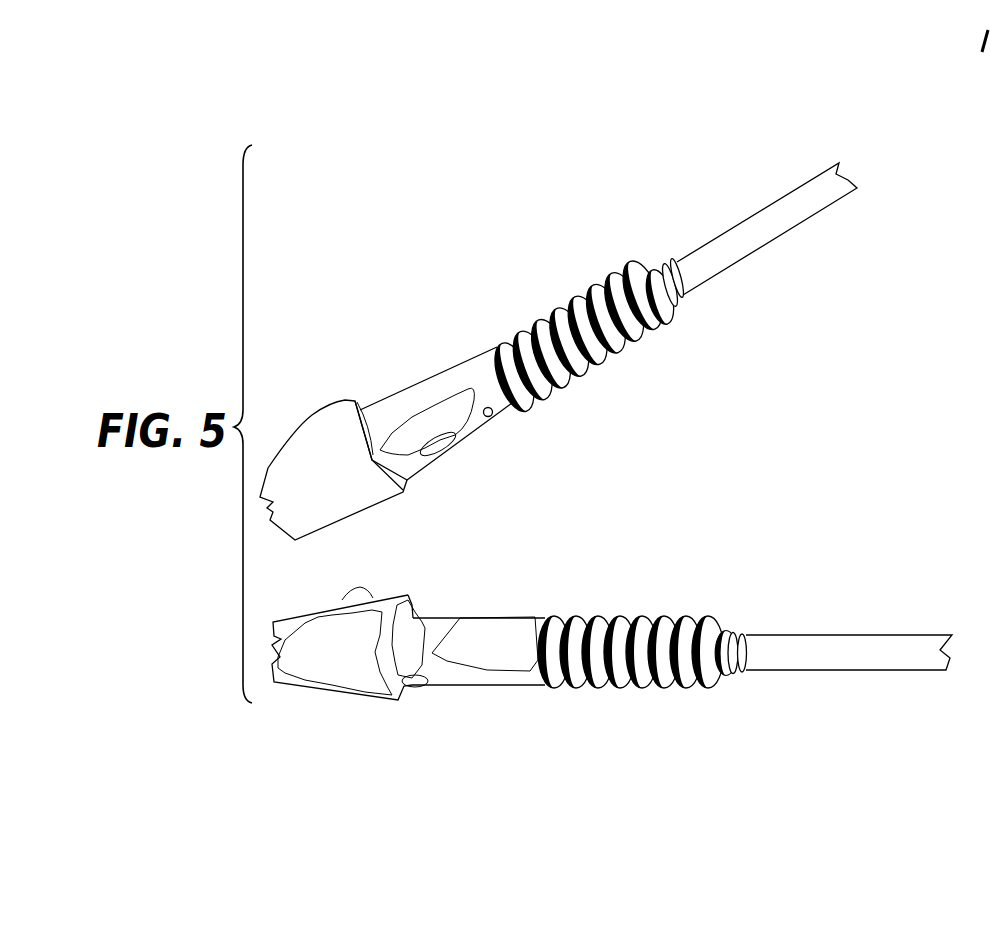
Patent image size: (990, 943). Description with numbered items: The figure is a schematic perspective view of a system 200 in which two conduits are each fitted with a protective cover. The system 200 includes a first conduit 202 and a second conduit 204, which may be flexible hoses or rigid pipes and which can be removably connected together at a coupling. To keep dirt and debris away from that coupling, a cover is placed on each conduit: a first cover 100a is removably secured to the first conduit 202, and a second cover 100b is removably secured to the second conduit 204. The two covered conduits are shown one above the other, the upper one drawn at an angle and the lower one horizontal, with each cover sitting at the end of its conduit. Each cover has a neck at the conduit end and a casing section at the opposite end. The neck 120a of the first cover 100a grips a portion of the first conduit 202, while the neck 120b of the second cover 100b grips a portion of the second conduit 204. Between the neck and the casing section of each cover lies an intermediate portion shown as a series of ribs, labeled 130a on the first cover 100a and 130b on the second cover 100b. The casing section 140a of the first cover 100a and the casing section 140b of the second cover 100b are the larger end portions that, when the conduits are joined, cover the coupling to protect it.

The system 200 is at (606, 445).
The first conduit 202 is at (727, 231).
The second conduit 204 is at (813, 635).
The first cover 100a is at (480, 355).
The second cover 100b is at (523, 686).
The neck 120a is at (679, 297).
The neck 120b is at (733, 674).
The strain relief coil 130a is at (568, 385).
The strain relief coil 130b is at (639, 616).
The casing section 140a is at (397, 405).
The casing section 140b is at (443, 618).